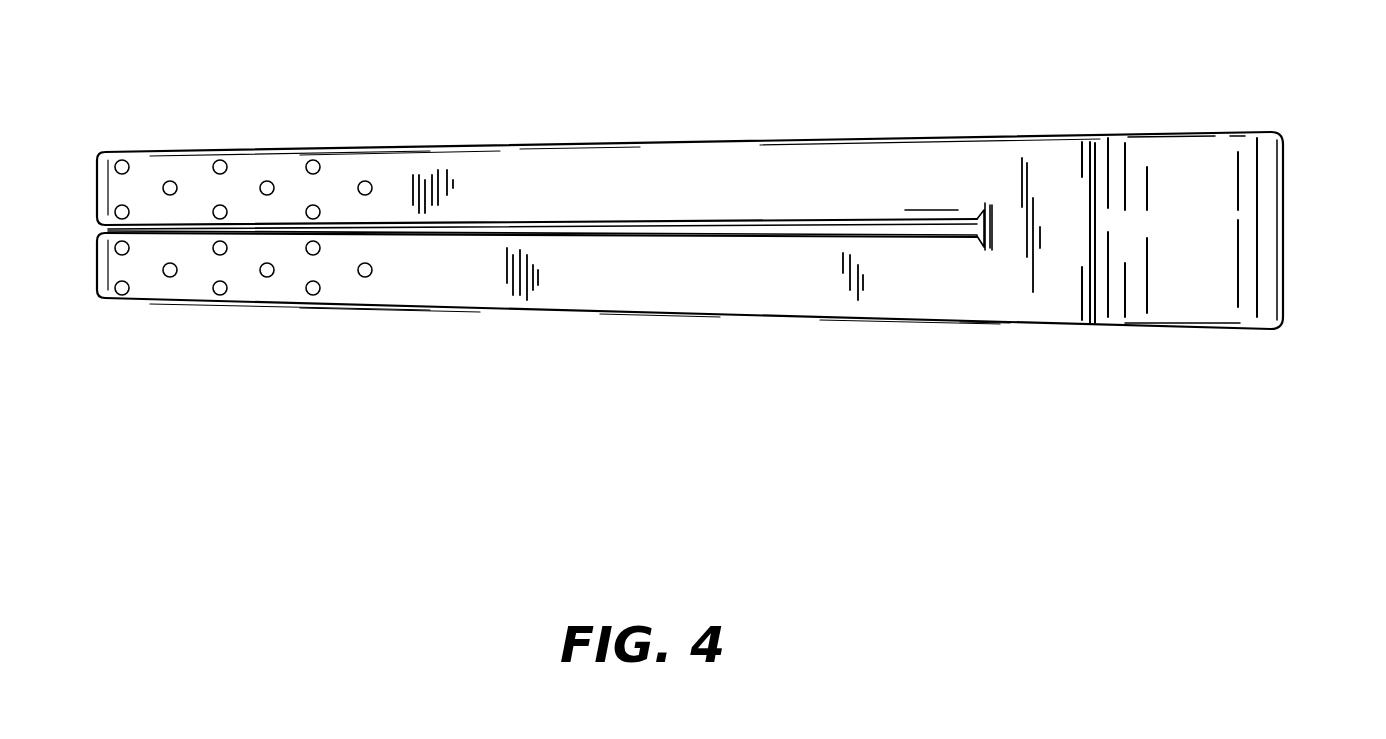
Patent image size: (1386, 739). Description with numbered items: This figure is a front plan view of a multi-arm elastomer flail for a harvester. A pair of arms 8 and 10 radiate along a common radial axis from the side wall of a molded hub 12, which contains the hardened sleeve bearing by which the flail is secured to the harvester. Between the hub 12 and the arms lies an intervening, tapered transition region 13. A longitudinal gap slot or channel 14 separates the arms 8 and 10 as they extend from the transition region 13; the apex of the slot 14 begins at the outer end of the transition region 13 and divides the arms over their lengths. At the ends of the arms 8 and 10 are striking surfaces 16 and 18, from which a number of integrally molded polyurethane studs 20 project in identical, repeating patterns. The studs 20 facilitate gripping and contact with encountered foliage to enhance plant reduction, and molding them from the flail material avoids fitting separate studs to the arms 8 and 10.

The arm 8 is at (606, 140).
The arm 10 is at (646, 313).
The molded hub 12 is at (1283, 199).
The tapered transition region 13 is at (1020, 316).
The longitudinal gap slot 14 is at (868, 222).
The striking surface 16 is at (508, 160).
The striking surface 18 is at (470, 300).
The studs 20 is at (220, 160).